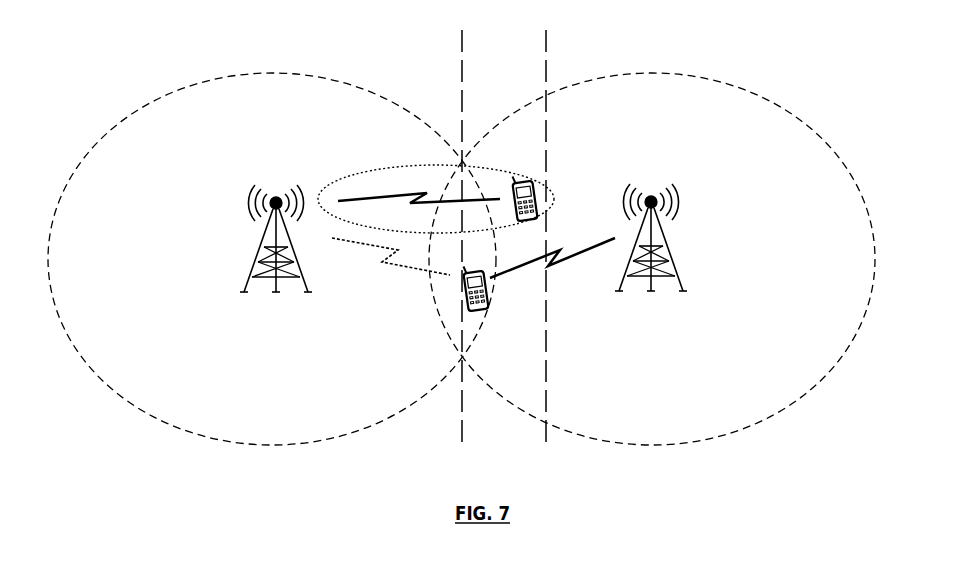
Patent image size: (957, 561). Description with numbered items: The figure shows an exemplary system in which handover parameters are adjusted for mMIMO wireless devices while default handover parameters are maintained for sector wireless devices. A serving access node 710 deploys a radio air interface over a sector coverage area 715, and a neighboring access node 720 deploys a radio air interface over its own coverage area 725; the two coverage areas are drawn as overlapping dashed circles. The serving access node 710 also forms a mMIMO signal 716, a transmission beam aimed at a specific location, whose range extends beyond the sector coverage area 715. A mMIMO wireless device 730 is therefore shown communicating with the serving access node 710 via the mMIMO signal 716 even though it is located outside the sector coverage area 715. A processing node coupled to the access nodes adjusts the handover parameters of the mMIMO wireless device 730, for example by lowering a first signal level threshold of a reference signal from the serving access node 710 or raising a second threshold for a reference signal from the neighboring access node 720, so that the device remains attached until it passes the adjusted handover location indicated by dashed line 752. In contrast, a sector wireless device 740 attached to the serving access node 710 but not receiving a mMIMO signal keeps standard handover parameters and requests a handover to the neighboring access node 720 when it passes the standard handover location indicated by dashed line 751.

The access node 710 is at (255, 282).
The coverage area 715 is at (137, 404).
The mMIMO signal 716 is at (410, 165).
The access node 720 is at (680, 280).
The coverage area 725 is at (770, 412).
The wireless device 730 is at (540, 181).
The sector wireless device 740 is at (487, 300).
The dashed line 751 is at (462, 38).
The dashed line 752 is at (546, 40).